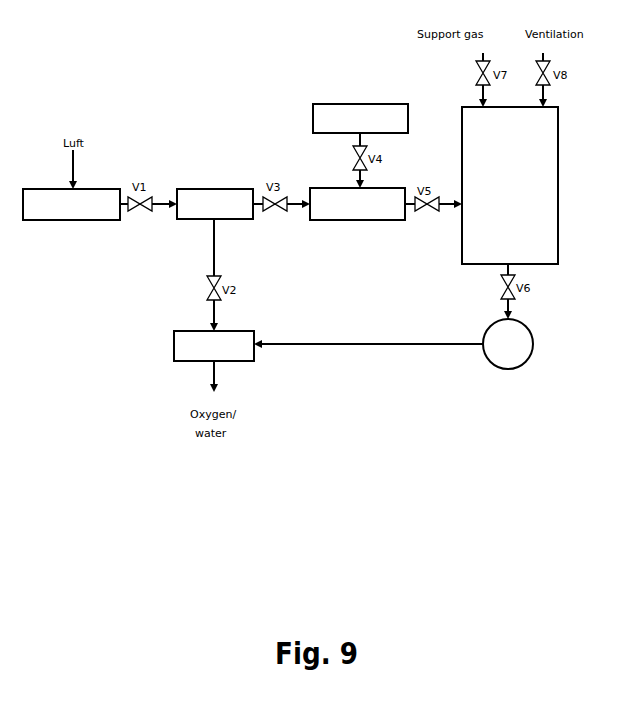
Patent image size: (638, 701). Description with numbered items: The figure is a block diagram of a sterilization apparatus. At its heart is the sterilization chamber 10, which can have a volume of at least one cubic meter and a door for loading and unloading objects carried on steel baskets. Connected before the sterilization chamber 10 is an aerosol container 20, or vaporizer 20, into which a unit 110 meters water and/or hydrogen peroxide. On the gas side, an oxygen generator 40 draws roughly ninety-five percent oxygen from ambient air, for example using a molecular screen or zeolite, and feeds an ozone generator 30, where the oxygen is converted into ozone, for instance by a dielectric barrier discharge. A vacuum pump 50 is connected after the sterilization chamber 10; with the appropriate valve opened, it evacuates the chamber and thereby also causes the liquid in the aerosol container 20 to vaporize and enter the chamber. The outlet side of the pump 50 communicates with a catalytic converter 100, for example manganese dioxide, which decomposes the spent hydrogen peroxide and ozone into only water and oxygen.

The sterilization chamber 10 is at (546, 162).
The aerosol container 20 is at (360, 215).
The ozone generator 30 is at (212, 194).
The oxygen generator 40 is at (63, 216).
The vacuum pump 50 is at (520, 344).
The catalytic converter 100 is at (228, 348).
The metering unit 110 is at (351, 110).